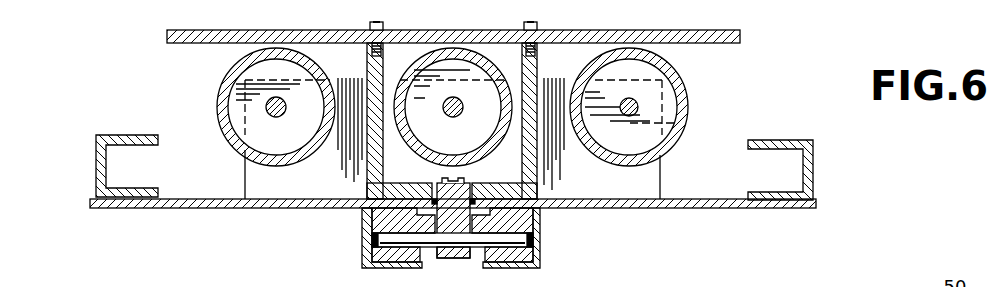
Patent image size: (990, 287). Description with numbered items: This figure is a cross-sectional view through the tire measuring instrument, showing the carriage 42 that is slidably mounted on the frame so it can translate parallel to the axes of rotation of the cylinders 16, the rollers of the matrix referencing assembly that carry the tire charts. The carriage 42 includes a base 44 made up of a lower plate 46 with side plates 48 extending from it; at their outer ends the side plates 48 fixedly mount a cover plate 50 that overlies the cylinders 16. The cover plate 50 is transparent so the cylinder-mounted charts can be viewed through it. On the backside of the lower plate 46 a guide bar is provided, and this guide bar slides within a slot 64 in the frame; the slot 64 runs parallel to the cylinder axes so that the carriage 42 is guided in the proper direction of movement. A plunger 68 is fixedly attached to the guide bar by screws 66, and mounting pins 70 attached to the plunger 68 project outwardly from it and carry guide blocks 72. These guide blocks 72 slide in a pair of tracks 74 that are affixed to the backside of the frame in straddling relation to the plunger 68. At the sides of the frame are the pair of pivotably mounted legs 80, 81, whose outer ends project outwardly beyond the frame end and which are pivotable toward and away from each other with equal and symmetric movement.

The cylinder 16 is at (220, 85).
The carriage 42 is at (607, 29).
The base 44 is at (542, 185).
The lower plate 46 is at (418, 193).
The side plate 48 is at (367, 63).
The cover plate 50 is at (478, 29).
The slot 64 is at (475, 195).
The screw 66 is at (452, 182).
The plunger 68 is at (455, 258).
The mounting pin 70 is at (540, 235).
The guide block 72 is at (383, 255).
The track 74 is at (451, 247).
The leg 80 is at (150, 135).
The leg 81 is at (791, 140).